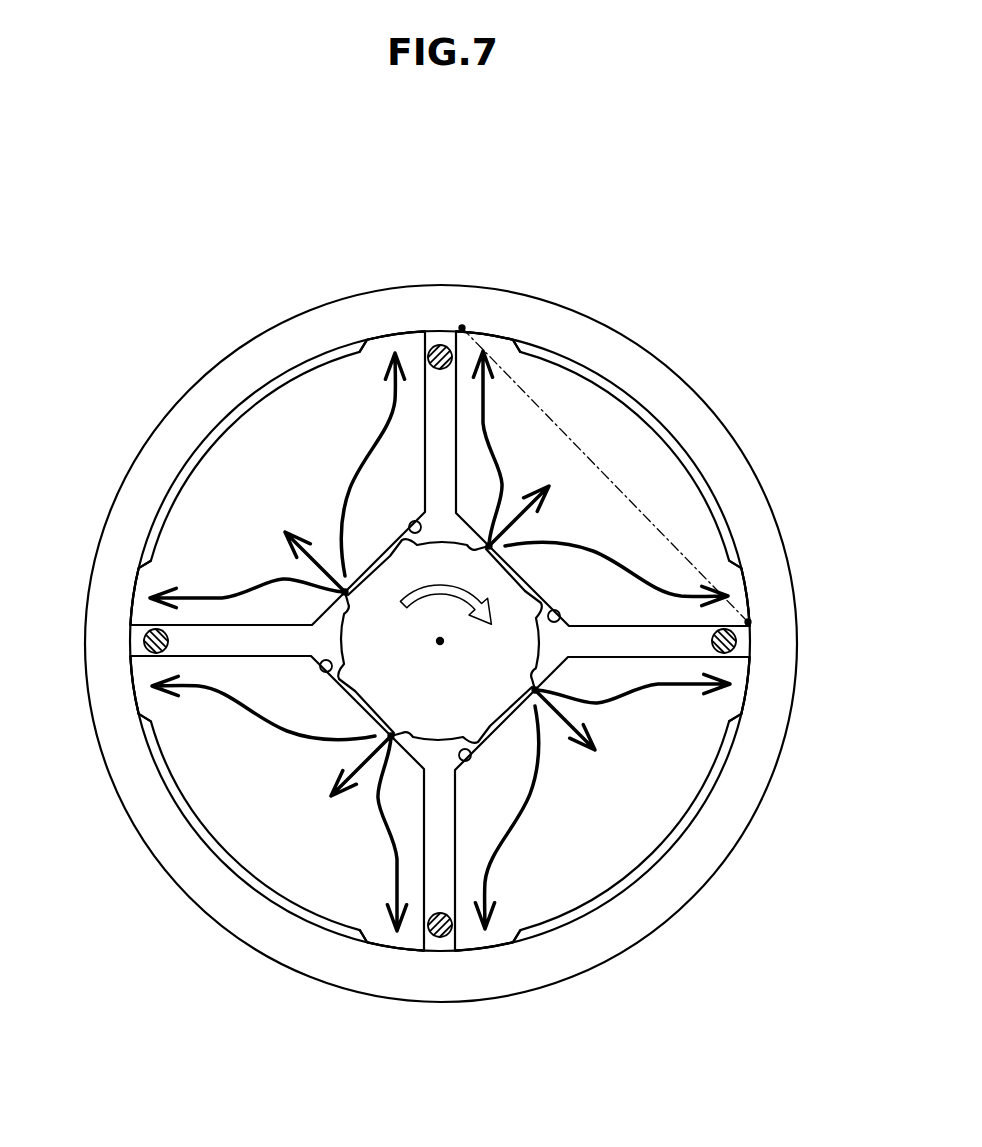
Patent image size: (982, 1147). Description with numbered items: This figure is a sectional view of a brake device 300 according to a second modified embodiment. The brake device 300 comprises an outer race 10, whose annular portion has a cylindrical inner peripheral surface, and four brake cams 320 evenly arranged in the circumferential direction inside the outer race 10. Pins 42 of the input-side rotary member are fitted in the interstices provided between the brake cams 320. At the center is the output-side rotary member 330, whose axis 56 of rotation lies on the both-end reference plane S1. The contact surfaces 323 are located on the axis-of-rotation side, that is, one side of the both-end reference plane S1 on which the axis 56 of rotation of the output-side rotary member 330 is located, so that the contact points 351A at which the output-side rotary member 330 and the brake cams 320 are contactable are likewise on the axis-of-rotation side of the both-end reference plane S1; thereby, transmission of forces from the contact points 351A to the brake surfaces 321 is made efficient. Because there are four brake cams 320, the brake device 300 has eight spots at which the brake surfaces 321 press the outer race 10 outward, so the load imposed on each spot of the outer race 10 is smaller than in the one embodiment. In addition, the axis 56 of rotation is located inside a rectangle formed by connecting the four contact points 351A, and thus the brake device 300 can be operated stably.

The brake device 300 is at (723, 249).
The outer race 10 is at (668, 350).
The brake cam 320 is at (235, 408).
The brake surface 321 is at (394, 331).
The pin 42 is at (440, 344).
The contact surface 323 is at (413, 522).
The output-side rotary member 330 is at (549, 645).
The contact point 351A is at (488, 548).
The axis of rotation 56 is at (440, 645).
The both-end reference plane S1 is at (655, 523).